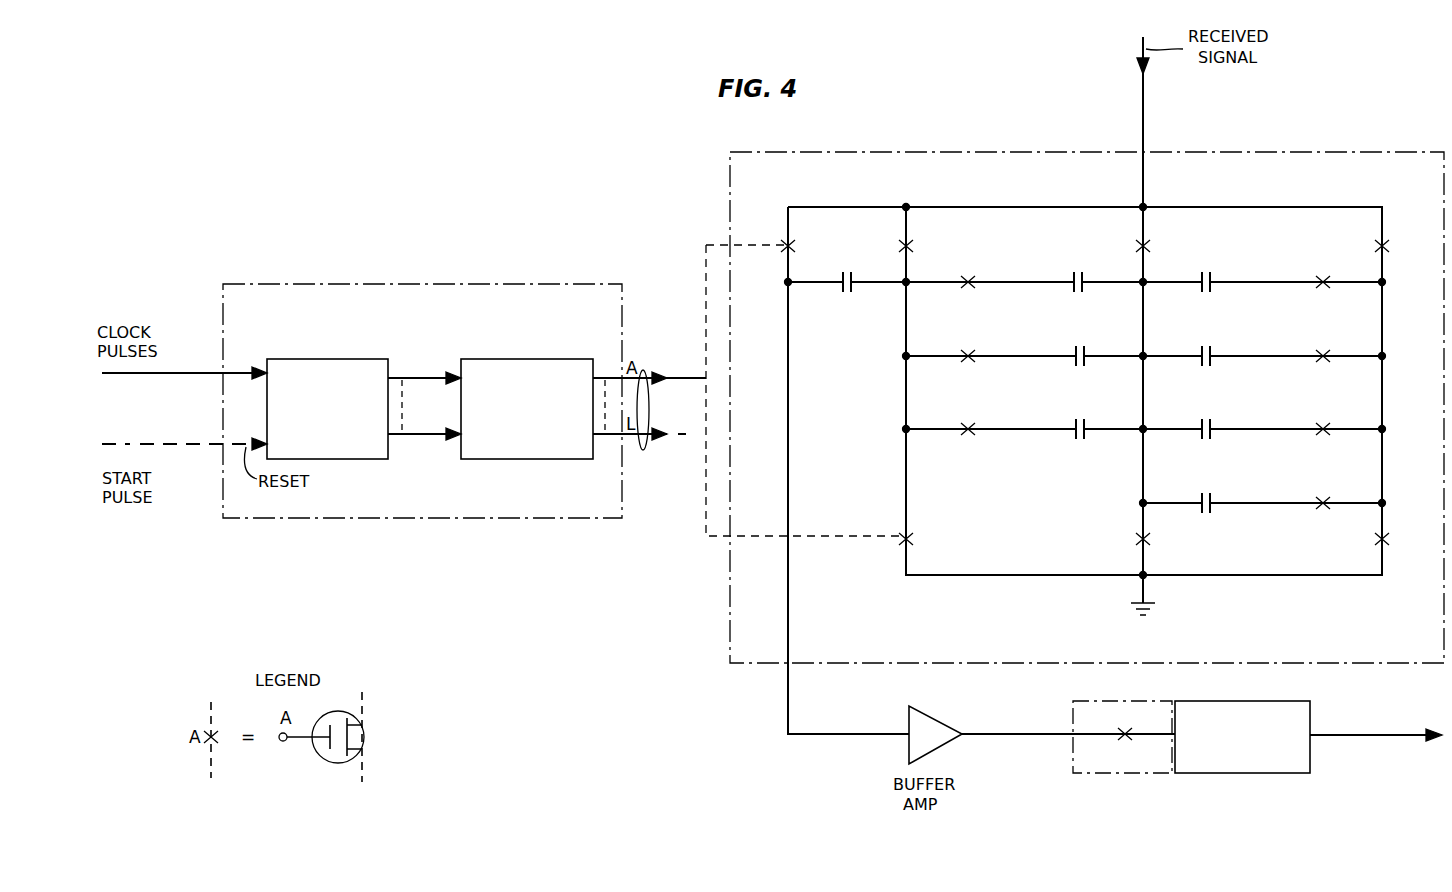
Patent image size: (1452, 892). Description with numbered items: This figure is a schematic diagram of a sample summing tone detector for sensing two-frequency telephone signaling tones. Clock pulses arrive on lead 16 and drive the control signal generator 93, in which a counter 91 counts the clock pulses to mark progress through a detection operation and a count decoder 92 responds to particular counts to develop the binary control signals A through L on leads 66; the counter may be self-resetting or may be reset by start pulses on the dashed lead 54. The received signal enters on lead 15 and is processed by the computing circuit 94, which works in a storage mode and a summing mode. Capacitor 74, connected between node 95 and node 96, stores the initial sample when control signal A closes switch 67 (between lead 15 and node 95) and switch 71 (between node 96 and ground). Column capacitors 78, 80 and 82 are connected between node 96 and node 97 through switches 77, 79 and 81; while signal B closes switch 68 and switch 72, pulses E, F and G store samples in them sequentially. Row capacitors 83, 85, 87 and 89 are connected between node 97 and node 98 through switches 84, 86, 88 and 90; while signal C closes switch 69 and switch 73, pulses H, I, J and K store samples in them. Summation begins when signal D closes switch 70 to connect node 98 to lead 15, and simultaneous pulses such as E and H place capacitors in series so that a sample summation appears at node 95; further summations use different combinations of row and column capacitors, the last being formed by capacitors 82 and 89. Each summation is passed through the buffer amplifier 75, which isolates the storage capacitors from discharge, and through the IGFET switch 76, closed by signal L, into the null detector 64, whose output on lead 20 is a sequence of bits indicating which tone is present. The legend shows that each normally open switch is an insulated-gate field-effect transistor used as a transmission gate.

The lead 15 is at (1142, 117).
The lead 16 is at (125, 375).
The lead 20 is at (1380, 734).
The dashed lead 54 is at (125, 443).
The null detector 64 is at (1275, 774).
The leads 66 is at (646, 449).
The switch 67 is at (786, 244).
The switch 68 is at (903, 246).
The switch 69 is at (1140, 246).
The switch 70 is at (1379, 246).
The switch 71 is at (903, 538).
The switch 72 is at (1140, 539).
The switch 73 is at (1379, 539).
The capacitor 74 is at (846, 295).
The buffer amplifier 75 is at (935, 721).
The switch 76 is at (1125, 727).
The switch 77 is at (973, 290).
The capacitor 78 is at (1077, 295).
The switch 79 is at (972, 365).
The capacitor 80 is at (1079, 369).
The switch 81 is at (972, 438).
The capacitor 82 is at (1079, 442).
The capacitor 83 is at (1206, 295).
The switch 84 is at (1326, 291).
The capacitor 85 is at (1206, 369).
The switch 86 is at (1326, 365).
The capacitor 87 is at (1209, 442).
The switch 88 is at (1328, 439).
The capacitor 89 is at (1207, 516).
The switch 90 is at (1325, 513).
The counter 91 is at (333, 359).
The count decoder 92 is at (527, 359).
The control signal generator 93 is at (422, 401).
The computing circuit 94 is at (1087, 407).
The node 95 is at (786, 282).
The node 96 is at (906, 287).
The node 97 is at (1143, 287).
The node 98 is at (1386, 283).